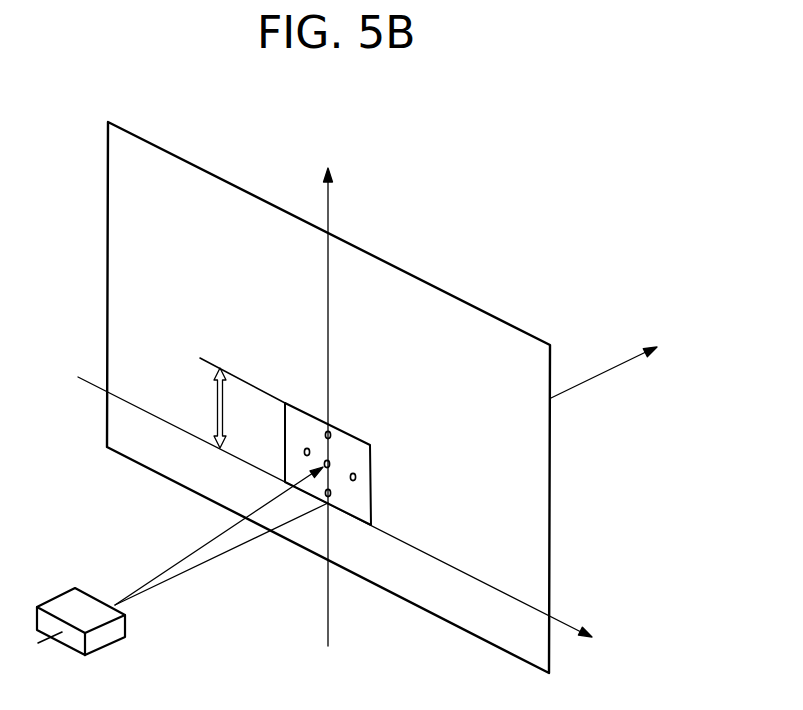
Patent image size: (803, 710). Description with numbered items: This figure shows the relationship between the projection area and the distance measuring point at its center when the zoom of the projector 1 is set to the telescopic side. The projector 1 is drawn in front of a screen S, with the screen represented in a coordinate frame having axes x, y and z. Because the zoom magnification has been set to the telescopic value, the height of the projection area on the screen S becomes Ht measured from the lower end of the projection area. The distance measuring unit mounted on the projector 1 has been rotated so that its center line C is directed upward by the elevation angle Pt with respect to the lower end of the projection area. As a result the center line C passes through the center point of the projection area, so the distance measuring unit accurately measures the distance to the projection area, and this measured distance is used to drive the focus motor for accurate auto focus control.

The screen S is at (161, 148).
The projector 1 is at (57, 596).
The center line C is at (200, 548).
The elevation angle Pt is at (194, 554).
The height of the projection area Ht is at (205, 408).
The x axis x is at (343, 515).
The y axis y is at (328, 390).
The z axis z is at (613, 365).